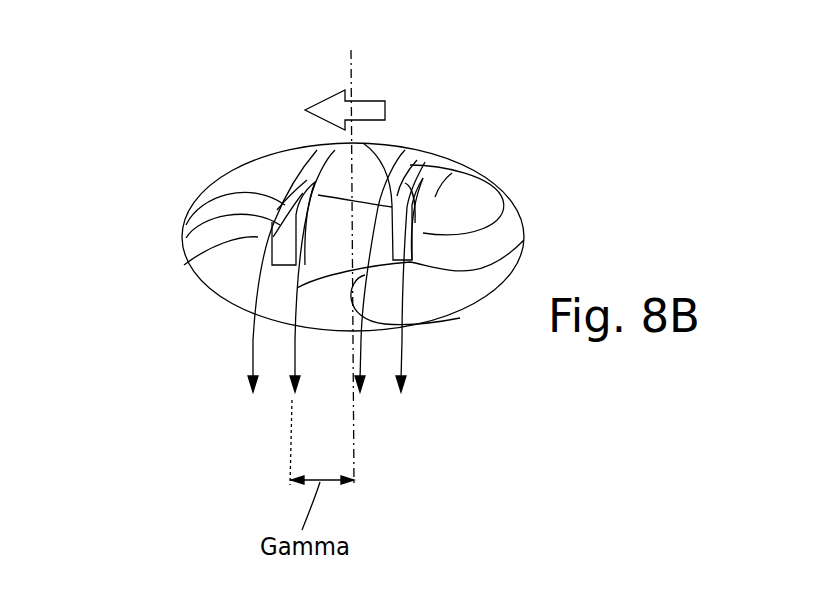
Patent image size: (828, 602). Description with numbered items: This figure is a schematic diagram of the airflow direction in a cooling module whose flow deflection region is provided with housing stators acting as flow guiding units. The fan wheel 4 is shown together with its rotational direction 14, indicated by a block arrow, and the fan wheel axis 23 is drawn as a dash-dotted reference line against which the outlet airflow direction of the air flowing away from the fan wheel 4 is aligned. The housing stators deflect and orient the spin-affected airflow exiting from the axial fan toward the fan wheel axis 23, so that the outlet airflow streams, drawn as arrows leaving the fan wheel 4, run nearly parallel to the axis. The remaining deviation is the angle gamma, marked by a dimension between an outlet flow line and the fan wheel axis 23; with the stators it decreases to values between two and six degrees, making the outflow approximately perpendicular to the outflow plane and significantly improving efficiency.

The fan wheel 4 is at (437, 165).
The rotational direction 14 is at (369, 107).
The fan wheel axis 23 is at (355, 430).